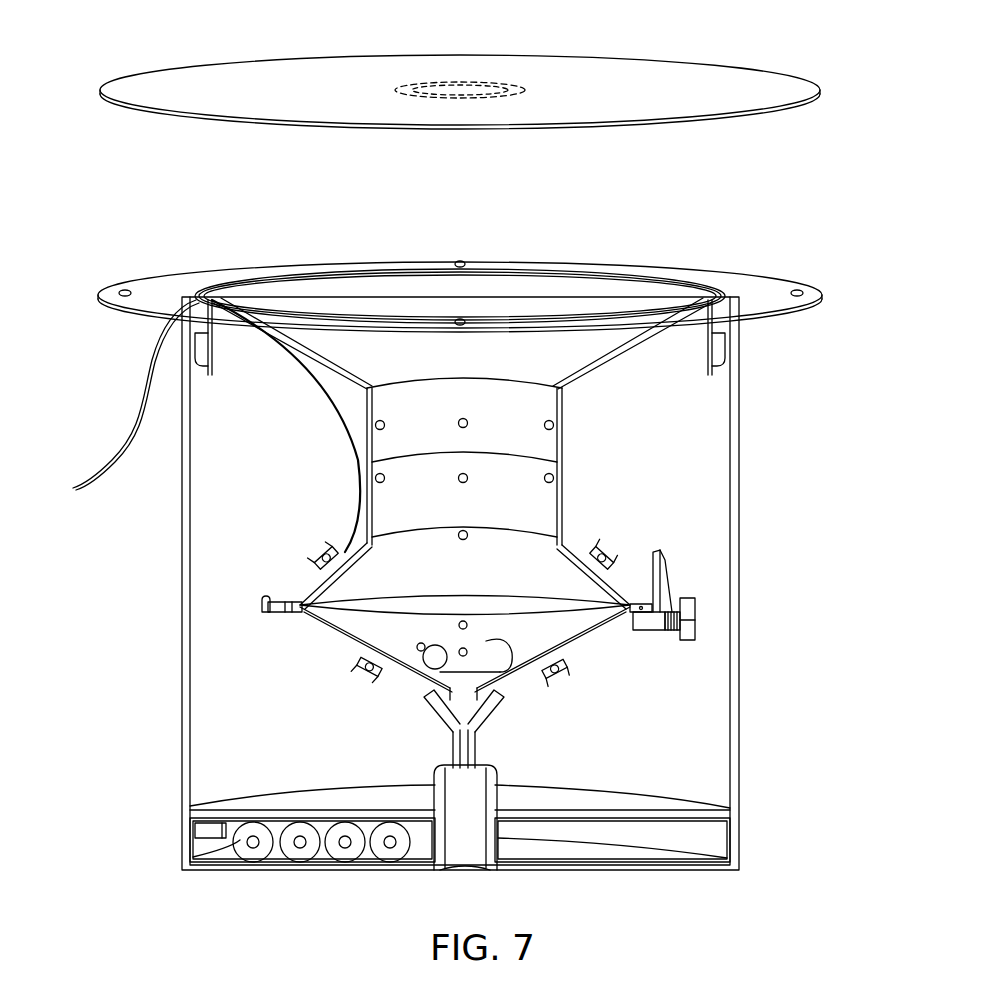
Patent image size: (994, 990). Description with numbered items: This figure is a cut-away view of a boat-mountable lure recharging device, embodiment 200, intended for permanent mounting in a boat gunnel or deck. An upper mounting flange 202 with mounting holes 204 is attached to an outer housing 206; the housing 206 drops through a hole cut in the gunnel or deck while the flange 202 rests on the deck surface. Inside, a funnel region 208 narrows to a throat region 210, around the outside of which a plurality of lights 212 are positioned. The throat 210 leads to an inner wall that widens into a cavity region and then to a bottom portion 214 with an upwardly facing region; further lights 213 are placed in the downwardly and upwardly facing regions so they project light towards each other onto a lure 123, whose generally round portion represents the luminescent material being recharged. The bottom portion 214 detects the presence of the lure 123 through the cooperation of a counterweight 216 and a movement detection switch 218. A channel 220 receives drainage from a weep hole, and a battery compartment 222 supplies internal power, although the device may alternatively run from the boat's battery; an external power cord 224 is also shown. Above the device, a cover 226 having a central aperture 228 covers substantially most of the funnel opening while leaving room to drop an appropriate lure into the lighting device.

The embodiment 200 is at (796, 248).
The upper mounting flange 202 is at (812, 286).
The mounting holes 204 is at (803, 300).
The outer housing 206 is at (743, 462).
The funnel region 208 is at (638, 338).
The throat region 210 is at (566, 448).
The lights 212 is at (375, 425).
The lights 213 is at (322, 552).
The bottom portion 214 is at (598, 633).
The counterweight 216 is at (695, 612).
The movement detection switch 218 is at (265, 603).
The channel 220 is at (462, 870).
The battery compartment 222 is at (390, 862).
The cord 224 is at (112, 456).
The cover 226 is at (796, 76).
The central aperture 228 is at (466, 84).
The lure 123 is at (428, 662).